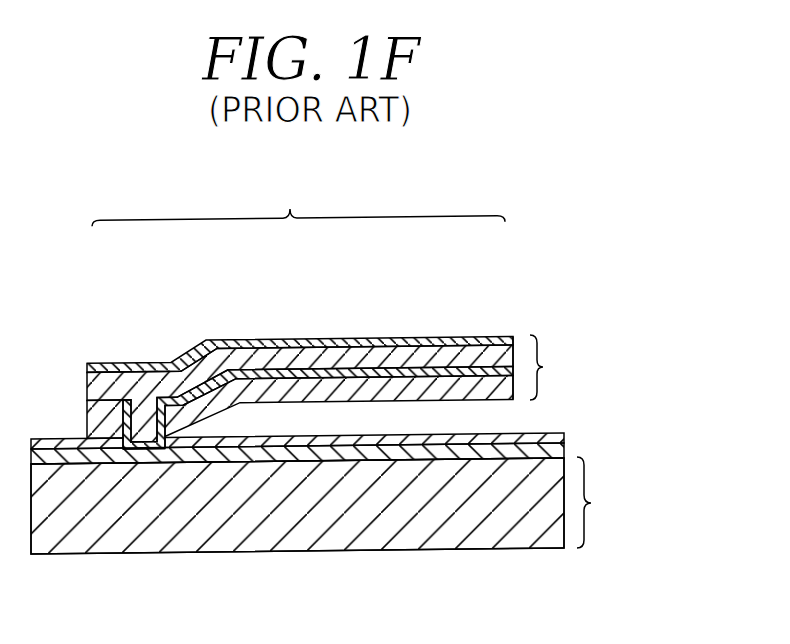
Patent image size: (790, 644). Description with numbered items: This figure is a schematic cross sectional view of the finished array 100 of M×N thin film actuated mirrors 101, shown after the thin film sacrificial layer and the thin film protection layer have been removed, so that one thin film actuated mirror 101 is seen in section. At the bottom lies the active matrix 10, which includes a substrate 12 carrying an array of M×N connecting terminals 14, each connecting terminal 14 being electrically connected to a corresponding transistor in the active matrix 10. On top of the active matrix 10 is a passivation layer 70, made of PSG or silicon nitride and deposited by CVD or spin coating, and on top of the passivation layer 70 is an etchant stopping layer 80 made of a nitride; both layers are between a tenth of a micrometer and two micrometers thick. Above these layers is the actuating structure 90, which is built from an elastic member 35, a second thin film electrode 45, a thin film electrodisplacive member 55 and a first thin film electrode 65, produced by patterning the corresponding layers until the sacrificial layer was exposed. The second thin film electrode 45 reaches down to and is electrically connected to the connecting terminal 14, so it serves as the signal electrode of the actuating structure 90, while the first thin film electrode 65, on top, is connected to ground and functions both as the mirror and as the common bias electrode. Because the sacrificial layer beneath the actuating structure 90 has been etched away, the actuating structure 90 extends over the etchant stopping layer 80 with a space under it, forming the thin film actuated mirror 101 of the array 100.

The active matrix 10 is at (337, 505).
The substrate 12 is at (293, 520).
The connecting terminal 14 is at (147, 456).
The elastic member 35 is at (437, 387).
The second thin film electrode 45 is at (370, 370).
The thin film electrodisplacive member 55 is at (278, 356).
The first thin film electrode 65 is at (208, 343).
The passivation layer 70 is at (553, 446).
The etchant stopping layer 80 is at (557, 434).
The actuating structure 90 is at (550, 367).
The array of thin film actuated mirrors 100 is at (591, 170).
The thin film actuated mirror 101 is at (298, 199).